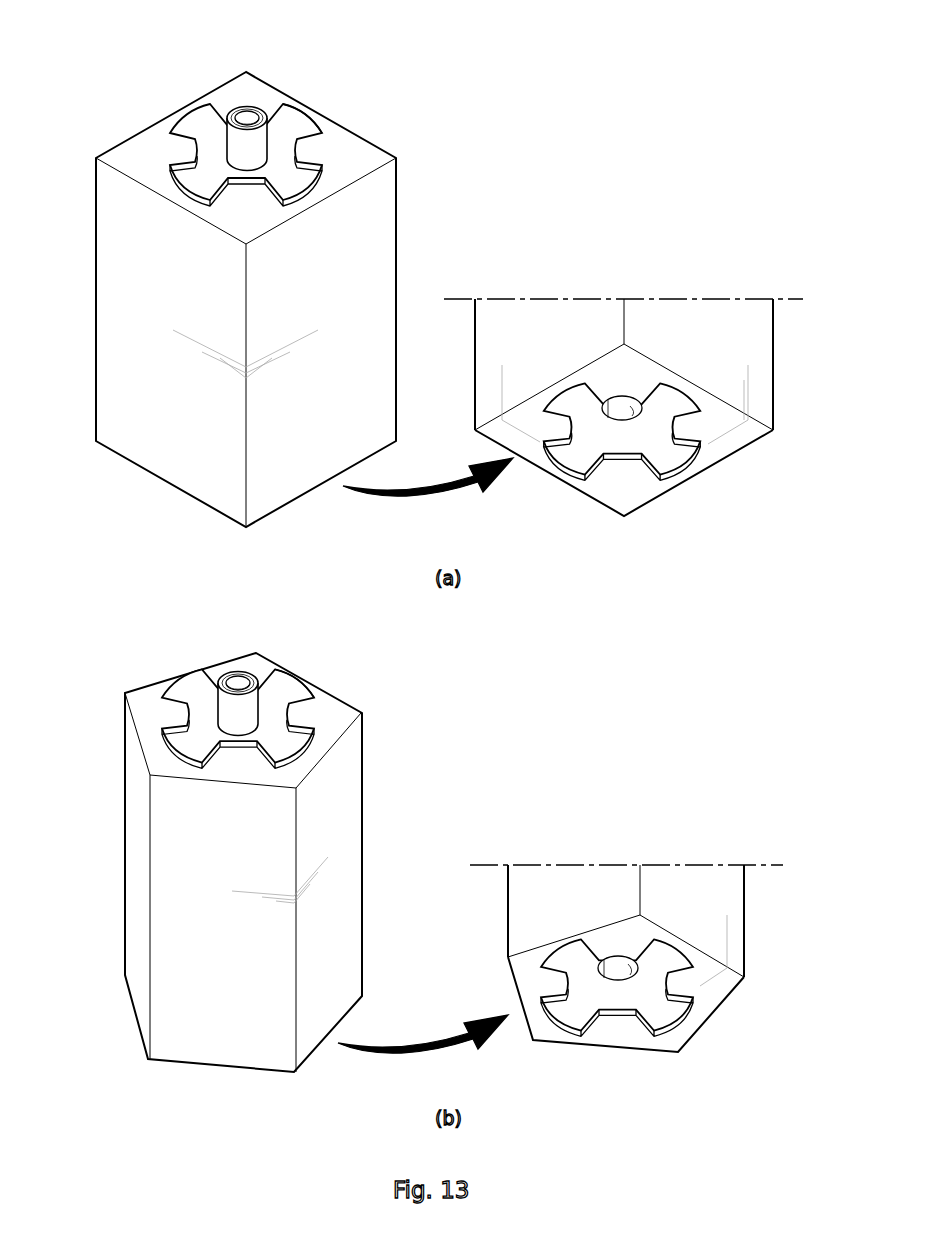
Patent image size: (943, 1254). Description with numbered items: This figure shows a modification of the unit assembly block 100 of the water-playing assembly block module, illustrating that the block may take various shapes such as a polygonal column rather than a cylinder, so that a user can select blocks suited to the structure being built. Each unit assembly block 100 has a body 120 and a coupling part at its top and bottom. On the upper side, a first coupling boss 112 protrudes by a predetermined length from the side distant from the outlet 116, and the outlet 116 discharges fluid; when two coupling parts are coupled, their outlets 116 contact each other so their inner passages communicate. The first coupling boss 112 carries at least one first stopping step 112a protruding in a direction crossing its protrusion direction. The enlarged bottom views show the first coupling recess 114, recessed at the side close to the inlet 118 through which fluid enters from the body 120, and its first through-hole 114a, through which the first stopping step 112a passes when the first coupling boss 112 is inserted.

The unit assembly block 100 is at (255, 573).
The first coupling boss 112 is at (293, 411).
The first stopping step 112a is at (297, 123).
The first coupling recess 114 is at (692, 432).
The first through-hole 114a is at (678, 396).
The outlet 116 is at (232, 137).
The inlet 118 is at (630, 406).
The body 120 is at (386, 245).